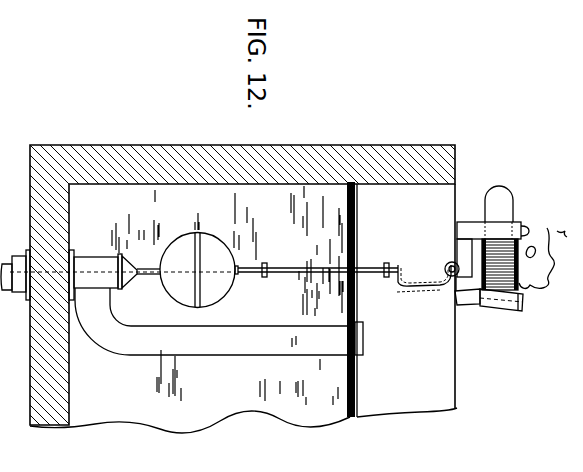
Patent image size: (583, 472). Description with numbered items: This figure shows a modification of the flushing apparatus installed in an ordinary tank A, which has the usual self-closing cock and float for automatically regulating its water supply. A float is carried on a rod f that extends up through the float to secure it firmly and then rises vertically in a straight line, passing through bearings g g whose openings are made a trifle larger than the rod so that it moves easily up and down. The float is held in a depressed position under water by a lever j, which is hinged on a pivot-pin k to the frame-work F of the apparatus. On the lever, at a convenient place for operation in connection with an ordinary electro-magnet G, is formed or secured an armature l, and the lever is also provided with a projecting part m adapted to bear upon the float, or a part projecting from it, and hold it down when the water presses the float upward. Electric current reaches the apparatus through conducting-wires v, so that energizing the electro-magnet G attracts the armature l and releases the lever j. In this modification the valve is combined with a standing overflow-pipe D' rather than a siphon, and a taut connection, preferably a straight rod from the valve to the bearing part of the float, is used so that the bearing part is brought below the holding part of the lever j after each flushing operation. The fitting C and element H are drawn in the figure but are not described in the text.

The tank A is at (291, 273).
The inlet coupling C is at (118, 275).
The overflow-pipe D' is at (219, 321).
The float H is at (197, 270).
The rod f is at (278, 273).
The bearings g is at (264, 262).
The projecting part m is at (397, 290).
The pivot-pin k is at (450, 259).
The lever j is at (452, 300).
The armature l is at (503, 299).
The frame-work F is at (458, 222).
The electro-magnet G is at (512, 264).
The conducting-wires v is at (543, 258).